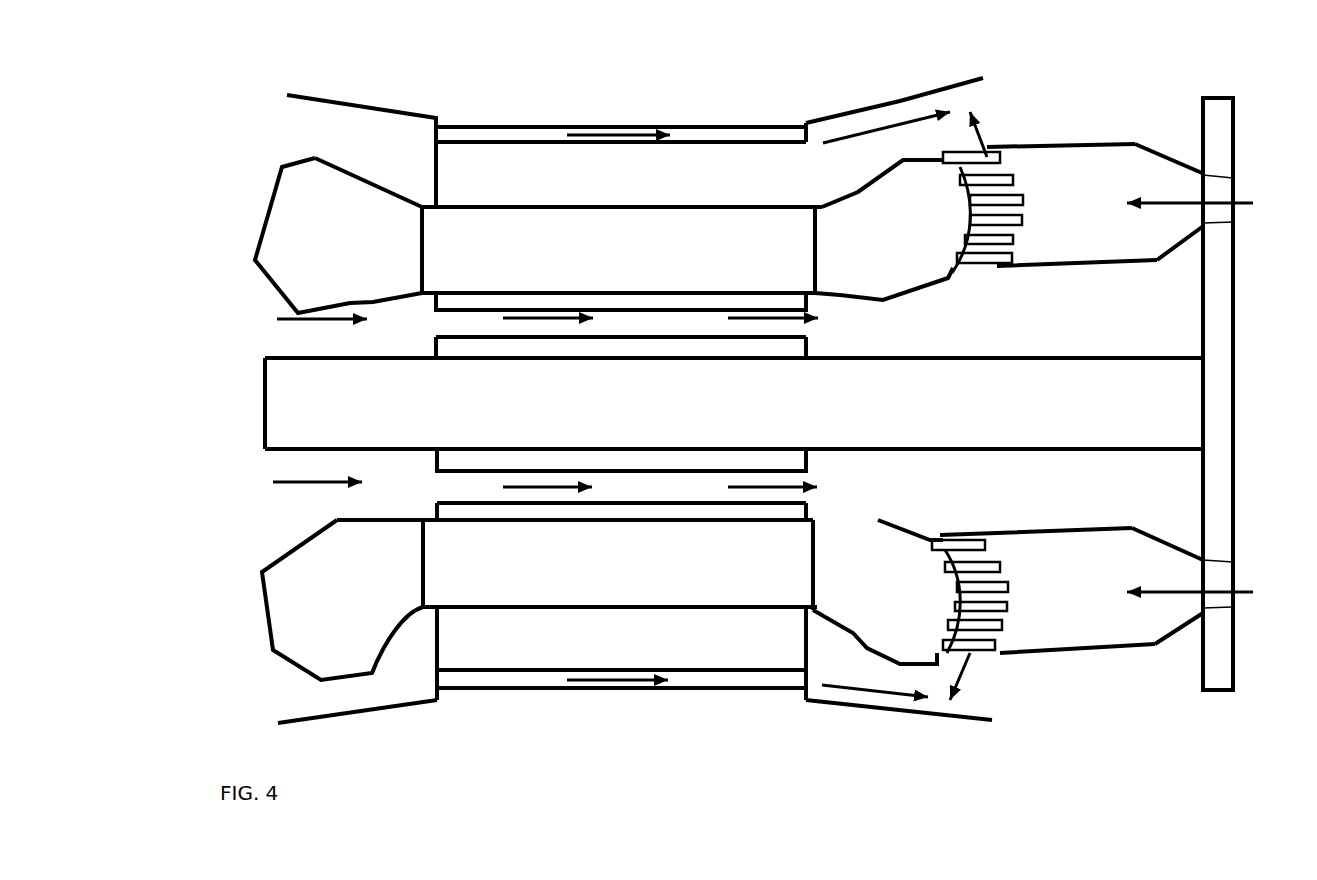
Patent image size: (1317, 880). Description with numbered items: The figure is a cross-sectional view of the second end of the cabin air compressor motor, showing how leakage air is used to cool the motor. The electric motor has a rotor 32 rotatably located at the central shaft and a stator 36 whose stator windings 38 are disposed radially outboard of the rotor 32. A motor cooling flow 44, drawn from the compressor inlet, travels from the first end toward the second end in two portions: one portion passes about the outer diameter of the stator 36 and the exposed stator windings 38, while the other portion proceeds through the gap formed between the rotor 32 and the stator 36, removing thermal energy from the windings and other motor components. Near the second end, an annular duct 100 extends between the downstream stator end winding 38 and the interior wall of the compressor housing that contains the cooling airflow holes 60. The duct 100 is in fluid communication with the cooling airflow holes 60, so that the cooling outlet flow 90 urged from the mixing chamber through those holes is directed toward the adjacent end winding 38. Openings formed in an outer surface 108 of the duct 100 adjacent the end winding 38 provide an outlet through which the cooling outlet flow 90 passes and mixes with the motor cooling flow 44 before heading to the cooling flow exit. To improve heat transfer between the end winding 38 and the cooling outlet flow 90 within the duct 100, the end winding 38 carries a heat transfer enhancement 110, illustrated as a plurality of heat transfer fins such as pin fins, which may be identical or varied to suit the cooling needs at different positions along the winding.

The rotor 32 is at (610, 352).
The stator 36 is at (517, 245).
The stator windings 38 is at (319, 233).
The motor cooling flow 44 is at (641, 127).
The cooling airflow holes 60 is at (1220, 187).
The cooling outlet flow 90 is at (1192, 202).
The annular duct 100 is at (1066, 143).
The outer surface 108 is at (1017, 657).
The heat transfer enhancement 110 is at (995, 257).